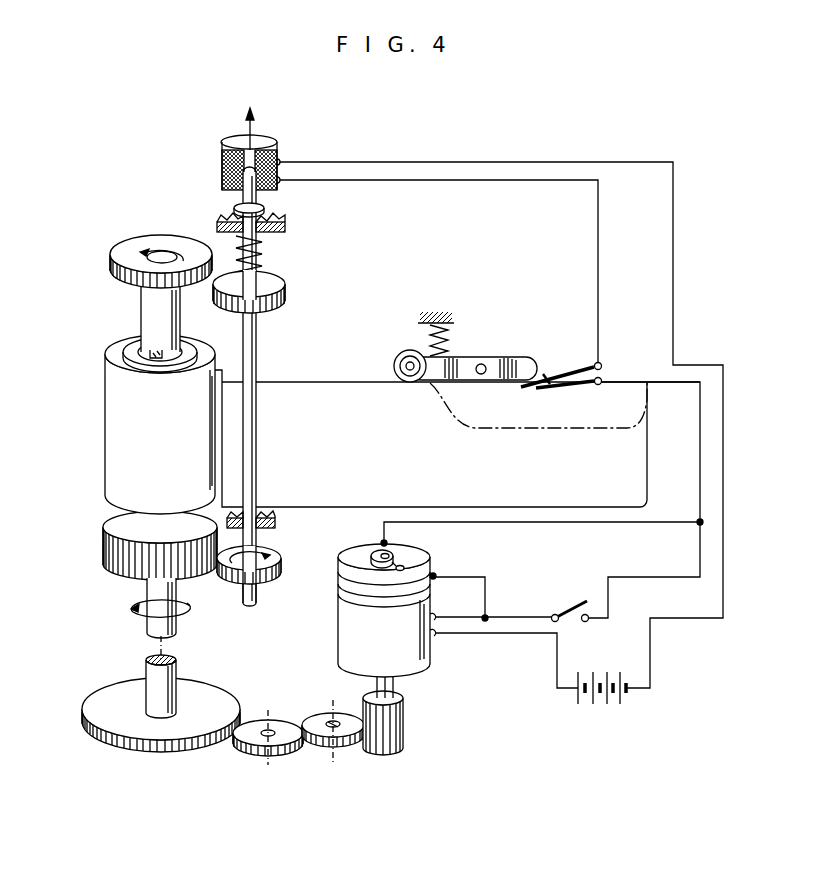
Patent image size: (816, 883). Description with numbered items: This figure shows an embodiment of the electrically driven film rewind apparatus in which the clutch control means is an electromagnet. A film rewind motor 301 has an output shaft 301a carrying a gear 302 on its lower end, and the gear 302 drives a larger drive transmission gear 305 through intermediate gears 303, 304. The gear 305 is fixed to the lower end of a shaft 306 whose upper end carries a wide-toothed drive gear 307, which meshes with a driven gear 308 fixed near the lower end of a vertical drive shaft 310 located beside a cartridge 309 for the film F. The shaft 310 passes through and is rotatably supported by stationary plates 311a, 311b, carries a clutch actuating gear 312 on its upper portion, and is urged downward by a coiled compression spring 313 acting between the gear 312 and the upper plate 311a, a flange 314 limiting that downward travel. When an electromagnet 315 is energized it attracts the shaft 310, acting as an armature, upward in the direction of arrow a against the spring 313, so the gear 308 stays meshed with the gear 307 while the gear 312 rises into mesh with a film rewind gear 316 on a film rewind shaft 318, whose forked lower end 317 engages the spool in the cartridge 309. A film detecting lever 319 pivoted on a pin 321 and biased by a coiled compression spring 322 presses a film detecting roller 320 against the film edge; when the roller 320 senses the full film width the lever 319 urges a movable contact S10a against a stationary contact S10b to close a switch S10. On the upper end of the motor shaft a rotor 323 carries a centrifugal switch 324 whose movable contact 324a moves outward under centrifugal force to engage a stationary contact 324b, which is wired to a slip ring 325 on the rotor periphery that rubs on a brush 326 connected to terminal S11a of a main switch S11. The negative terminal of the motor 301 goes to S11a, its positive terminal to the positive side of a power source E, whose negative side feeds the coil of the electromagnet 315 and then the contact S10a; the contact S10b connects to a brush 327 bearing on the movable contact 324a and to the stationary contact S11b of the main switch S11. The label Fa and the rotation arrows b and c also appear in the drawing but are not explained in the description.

The film rewind motor 301 is at (390, 610).
The output shaft 301a is at (397, 687).
The gear 302 is at (392, 750).
The intermediate gear 303 is at (341, 736).
The intermediate gear 304 is at (284, 742).
The drive transmission gear 305 is at (186, 746).
The shaft 306 is at (148, 680).
The drive gear 307 is at (118, 562).
The driven gear 308 is at (280, 560).
The cartridge 309 is at (108, 380).
The drive shaft 310 is at (257, 340).
The stationary plate 311a is at (287, 228).
The stationary plate 311b is at (276, 527).
The clutch actuating gear 312 is at (286, 290).
The coiled compression spring 313 is at (264, 254).
The flange 314 is at (236, 208).
The electromagnet 315 is at (282, 185).
The film rewind gear 316 is at (166, 240).
The forked lower end 317 is at (136, 350).
The film rewind shaft 318 is at (176, 318).
The film detecting lever 319 is at (468, 360).
The film detecting roller 320 is at (408, 350).
The pin 321 is at (481, 376).
The coiled compression spring 322 is at (450, 332).
The rotor 323 is at (386, 578).
The centrifugal switch 324 is at (397, 544).
The movable contact 324a is at (402, 564).
The stationary contact 324b is at (463, 563).
The conductive slip ring 325 is at (352, 592).
The brush 326 is at (460, 599).
The brush 327 is at (382, 542).
The switch S10 is at (562, 375).
The movable contact S10a is at (524, 387).
The stationary contact S10b is at (598, 384).
The main switch S11 is at (578, 609).
The terminal S11a is at (552, 614).
The stationary contact S11b is at (588, 622).
The power source E is at (606, 704).
The film F is at (306, 382).
The frame arm Fa is at (628, 428).
The arrow a is at (246, 119).
The direction of rotation b is at (180, 618).
The direction of rotation c is at (238, 576).